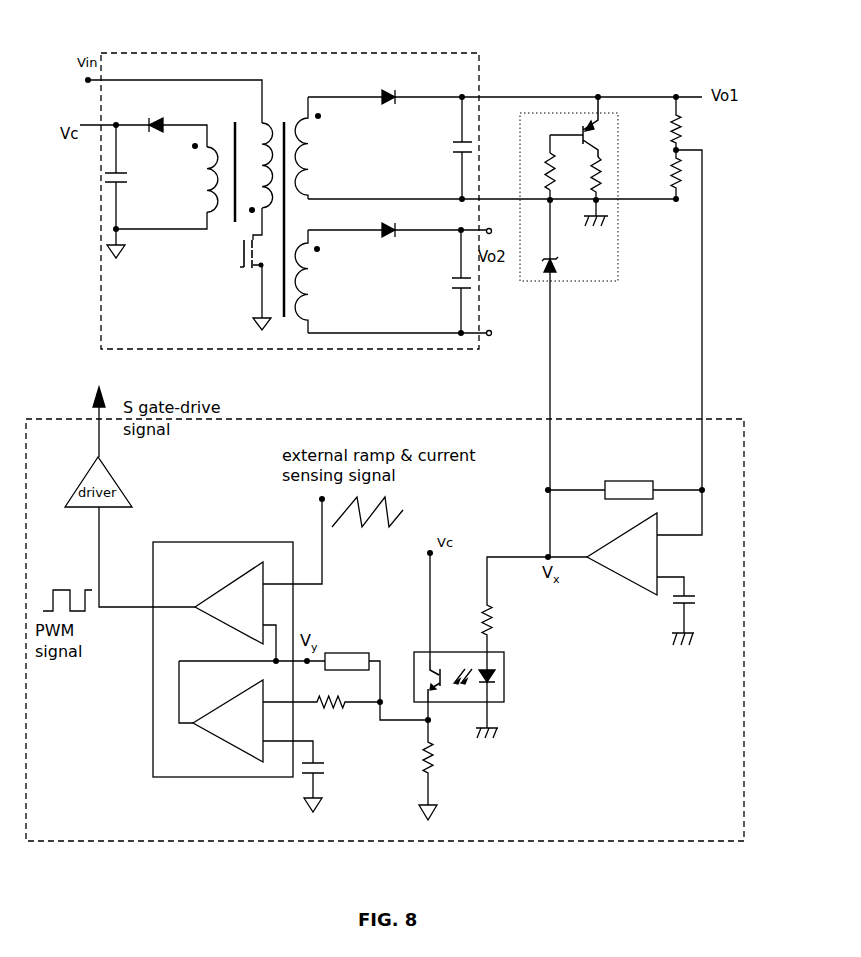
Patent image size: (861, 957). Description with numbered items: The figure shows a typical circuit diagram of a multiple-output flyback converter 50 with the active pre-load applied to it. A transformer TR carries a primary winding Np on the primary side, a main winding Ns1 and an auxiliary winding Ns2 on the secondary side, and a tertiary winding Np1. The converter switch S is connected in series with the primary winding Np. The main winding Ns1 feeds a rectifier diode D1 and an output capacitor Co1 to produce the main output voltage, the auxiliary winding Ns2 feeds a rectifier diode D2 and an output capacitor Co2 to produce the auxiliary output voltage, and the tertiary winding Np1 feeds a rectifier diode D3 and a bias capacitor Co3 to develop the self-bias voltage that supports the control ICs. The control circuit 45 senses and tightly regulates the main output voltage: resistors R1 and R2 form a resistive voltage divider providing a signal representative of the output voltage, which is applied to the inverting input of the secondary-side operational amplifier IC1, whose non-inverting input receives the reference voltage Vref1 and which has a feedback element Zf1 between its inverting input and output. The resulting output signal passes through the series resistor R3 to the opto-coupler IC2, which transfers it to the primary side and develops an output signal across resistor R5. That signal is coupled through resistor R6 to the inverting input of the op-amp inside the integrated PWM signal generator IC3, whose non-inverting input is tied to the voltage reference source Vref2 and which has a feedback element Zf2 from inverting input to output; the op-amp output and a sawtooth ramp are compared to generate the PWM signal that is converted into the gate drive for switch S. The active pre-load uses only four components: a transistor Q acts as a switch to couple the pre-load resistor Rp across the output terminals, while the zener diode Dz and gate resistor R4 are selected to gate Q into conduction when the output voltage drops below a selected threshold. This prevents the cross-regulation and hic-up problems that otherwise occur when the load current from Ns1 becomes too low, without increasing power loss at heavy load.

The multiple-output flyback converter 50 is at (251, 53).
The control circuit 45 is at (552, 842).
The transformer TR is at (287, 212).
The primary winding Np is at (259, 168).
The tertiary winding Np1 is at (198, 177).
The main winding Ns1 is at (317, 148).
The auxiliary winding Ns2 is at (316, 281).
The converter switch S is at (241, 254).
The rectifier diode D1 is at (394, 85).
The rectifier diode D2 is at (387, 242).
The rectifier diode D3 is at (157, 137).
The output capacitor Co1 is at (447, 151).
The output capacitor Co2 is at (446, 281).
The bias capacitor Co3 is at (130, 186).
The transistor Q is at (597, 127).
The pre-load resistor Rp is at (586, 186).
The voltage divider resistor R1 is at (688, 123).
The voltage divider resistor R2 is at (686, 174).
The series resistor R3 is at (515, 604).
The gate resistor R4 is at (541, 171).
The resistor R5 is at (416, 762).
The resistor R6 is at (321, 711).
The zener diode Dz is at (563, 259).
The secondary-side operational amplifier IC1 is at (622, 554).
The opto-coupler IC2 is at (459, 666).
The integrated pulse width modulation signal generator IC3 is at (239, 649).
The feedback element Zf1 is at (629, 475).
The feedback element Zf2 is at (347, 650).
The reference voltage Vref1 is at (704, 601).
The voltage reference source Vref2 is at (331, 767).